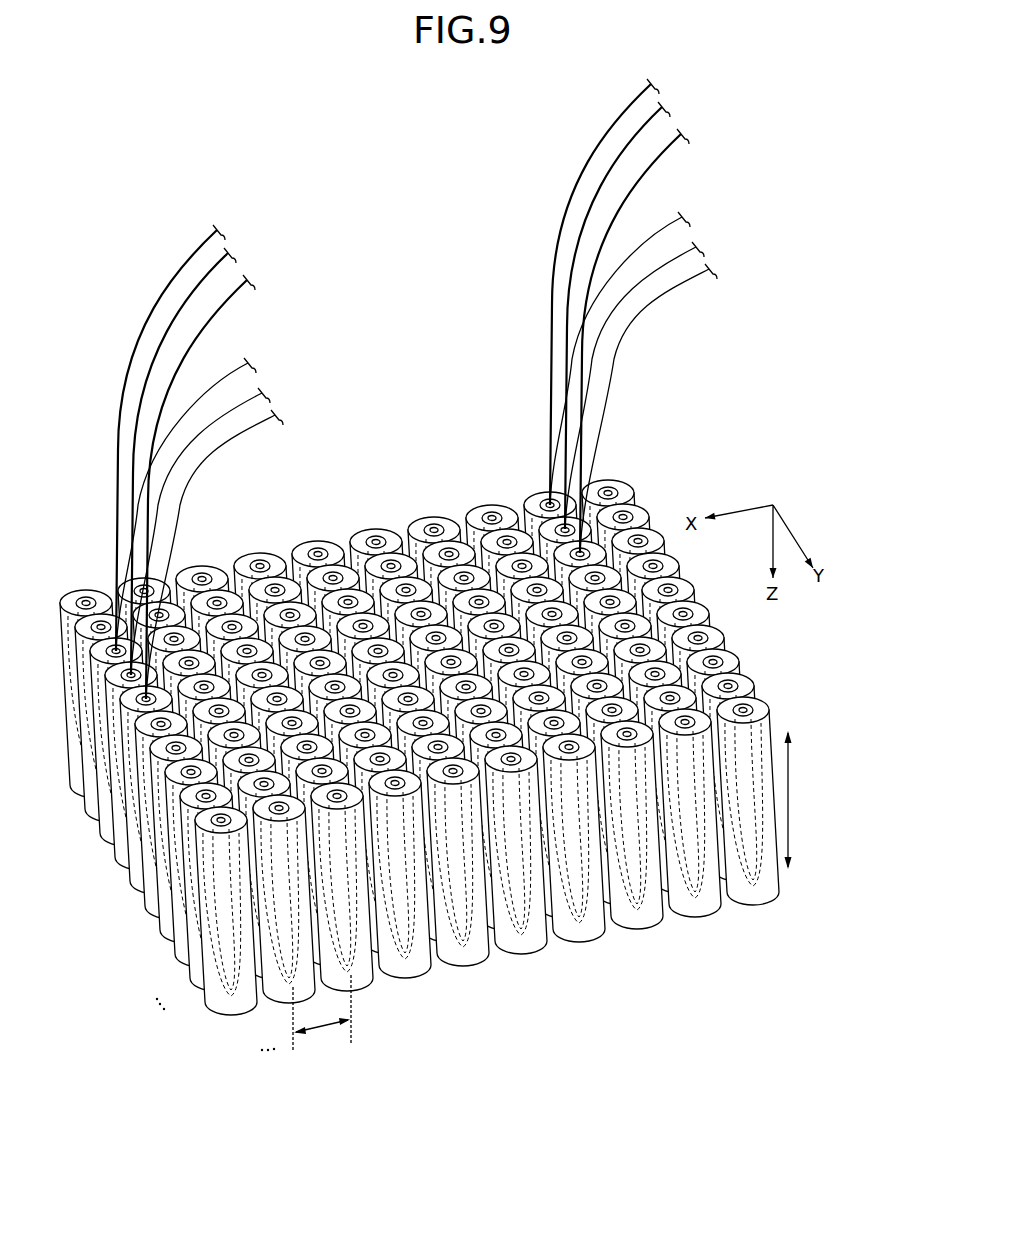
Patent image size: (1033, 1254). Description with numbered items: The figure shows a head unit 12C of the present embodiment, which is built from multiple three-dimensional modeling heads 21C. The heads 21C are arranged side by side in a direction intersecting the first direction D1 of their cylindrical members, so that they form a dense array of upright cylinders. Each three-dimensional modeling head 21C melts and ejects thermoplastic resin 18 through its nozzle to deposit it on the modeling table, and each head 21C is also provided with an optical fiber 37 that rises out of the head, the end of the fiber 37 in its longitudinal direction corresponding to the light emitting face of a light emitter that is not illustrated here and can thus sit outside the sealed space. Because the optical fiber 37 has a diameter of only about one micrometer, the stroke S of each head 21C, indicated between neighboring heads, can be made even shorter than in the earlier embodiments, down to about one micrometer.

The head unit 12C is at (802, 148).
The three-dimensional modeling head 21C is at (218, 1013).
The optical fiber 37 is at (183, 380).
The thermoplastic resin 18 is at (232, 455).
The first direction D1 is at (795, 790).
The stroke S is at (334, 1038).